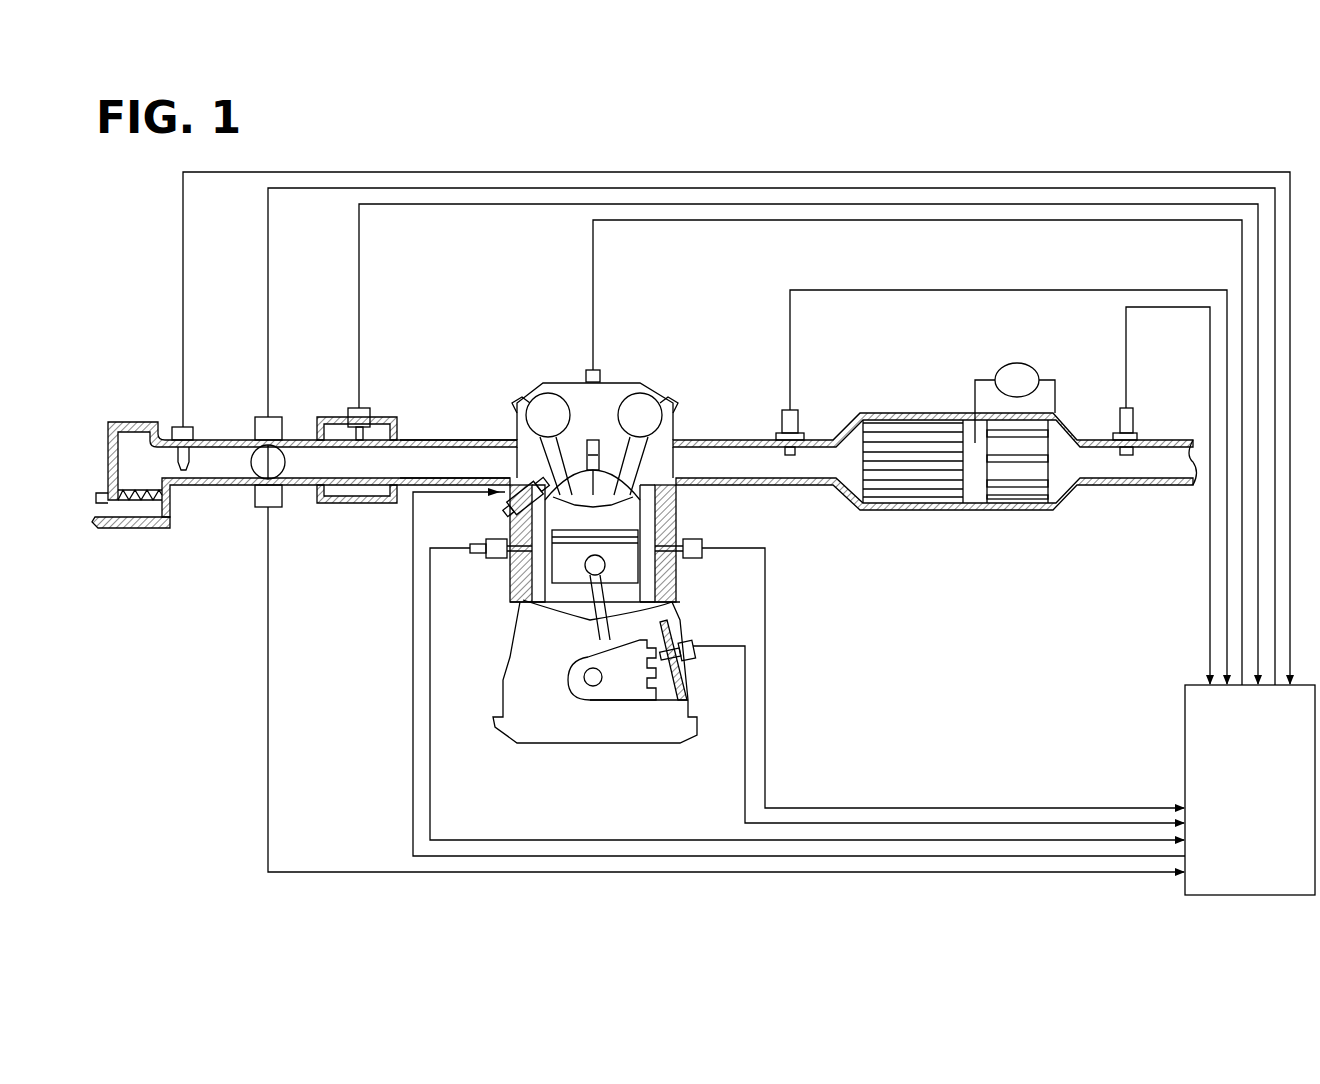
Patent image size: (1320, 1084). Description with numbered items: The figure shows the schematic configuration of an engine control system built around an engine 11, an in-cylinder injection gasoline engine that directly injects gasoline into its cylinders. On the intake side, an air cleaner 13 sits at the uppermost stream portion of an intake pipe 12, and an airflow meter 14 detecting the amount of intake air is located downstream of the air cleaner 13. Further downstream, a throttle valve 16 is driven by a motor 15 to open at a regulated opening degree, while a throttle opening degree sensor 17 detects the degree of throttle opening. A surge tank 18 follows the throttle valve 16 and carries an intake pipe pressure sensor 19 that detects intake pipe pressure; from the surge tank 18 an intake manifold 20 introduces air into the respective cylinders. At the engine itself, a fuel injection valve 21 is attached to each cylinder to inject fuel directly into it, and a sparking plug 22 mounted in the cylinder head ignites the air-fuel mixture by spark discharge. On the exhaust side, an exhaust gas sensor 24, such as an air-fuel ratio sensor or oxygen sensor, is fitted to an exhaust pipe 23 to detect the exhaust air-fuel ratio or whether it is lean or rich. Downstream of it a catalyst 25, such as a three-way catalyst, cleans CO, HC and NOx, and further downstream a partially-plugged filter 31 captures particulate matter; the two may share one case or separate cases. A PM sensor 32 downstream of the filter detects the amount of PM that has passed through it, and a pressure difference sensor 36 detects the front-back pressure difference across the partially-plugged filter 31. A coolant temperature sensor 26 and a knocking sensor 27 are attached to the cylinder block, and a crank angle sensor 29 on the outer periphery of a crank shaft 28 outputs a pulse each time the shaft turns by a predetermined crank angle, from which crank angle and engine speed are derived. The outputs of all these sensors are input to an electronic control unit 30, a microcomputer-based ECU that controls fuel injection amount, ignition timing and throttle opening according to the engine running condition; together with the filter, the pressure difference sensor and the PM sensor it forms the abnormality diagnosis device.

The engine 11 is at (827, 538).
The intake pipe 12 is at (222, 438).
The air cleaner 13 is at (135, 503).
The airflow meter 14 is at (178, 426).
The motor 15 is at (258, 416).
The throttle valve 16 is at (262, 462).
The throttle opening degree sensor 17 is at (282, 506).
The surge tank 18 is at (358, 505).
The intake pipe pressure sensor 19 is at (350, 408).
The intake manifold 20 is at (447, 438).
The fuel injection valve 21 is at (506, 499).
The sparking plug 22 is at (600, 382).
The exhaust pipe 23 is at (790, 486).
The exhaust gas sensor 24 is at (800, 420).
The catalyst 25 is at (920, 413).
The coolant temperature sensor 26 is at (490, 559).
The knocking sensor 27 is at (700, 561).
The crank shaft 28 is at (594, 688).
The crank angle sensor 29 is at (691, 660).
The electronic control unit (ECU) 30 is at (1185, 742).
The partially-plugged filter 31 is at (1013, 496).
The PM sensor 32 is at (1135, 420).
The pressure difference sensor 36 is at (1022, 364).